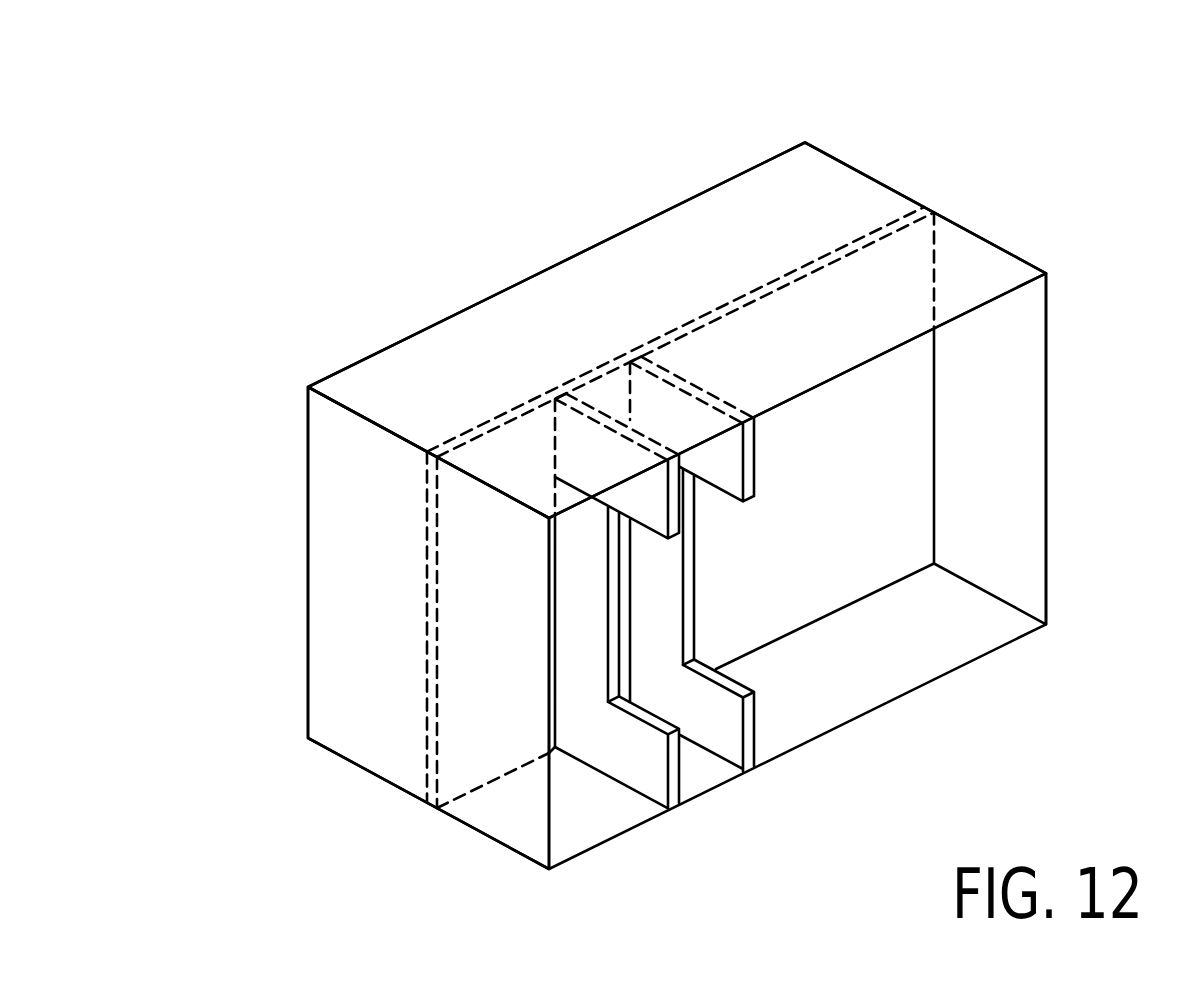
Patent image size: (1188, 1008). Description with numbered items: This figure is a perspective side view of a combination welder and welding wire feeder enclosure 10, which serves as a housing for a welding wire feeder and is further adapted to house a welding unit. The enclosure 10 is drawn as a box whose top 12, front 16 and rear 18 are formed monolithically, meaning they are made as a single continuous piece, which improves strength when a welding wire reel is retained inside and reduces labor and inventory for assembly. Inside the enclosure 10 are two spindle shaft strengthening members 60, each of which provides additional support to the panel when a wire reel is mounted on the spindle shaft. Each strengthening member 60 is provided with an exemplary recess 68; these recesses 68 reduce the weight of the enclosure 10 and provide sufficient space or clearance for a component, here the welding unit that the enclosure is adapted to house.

The enclosure 10 is at (268, 210).
The top 12 is at (368, 378).
The front 16 is at (1025, 386).
The rear 18 is at (348, 620).
The spindle shaft strengthening member 60 is at (652, 771).
The recesses 68 is at (608, 620).